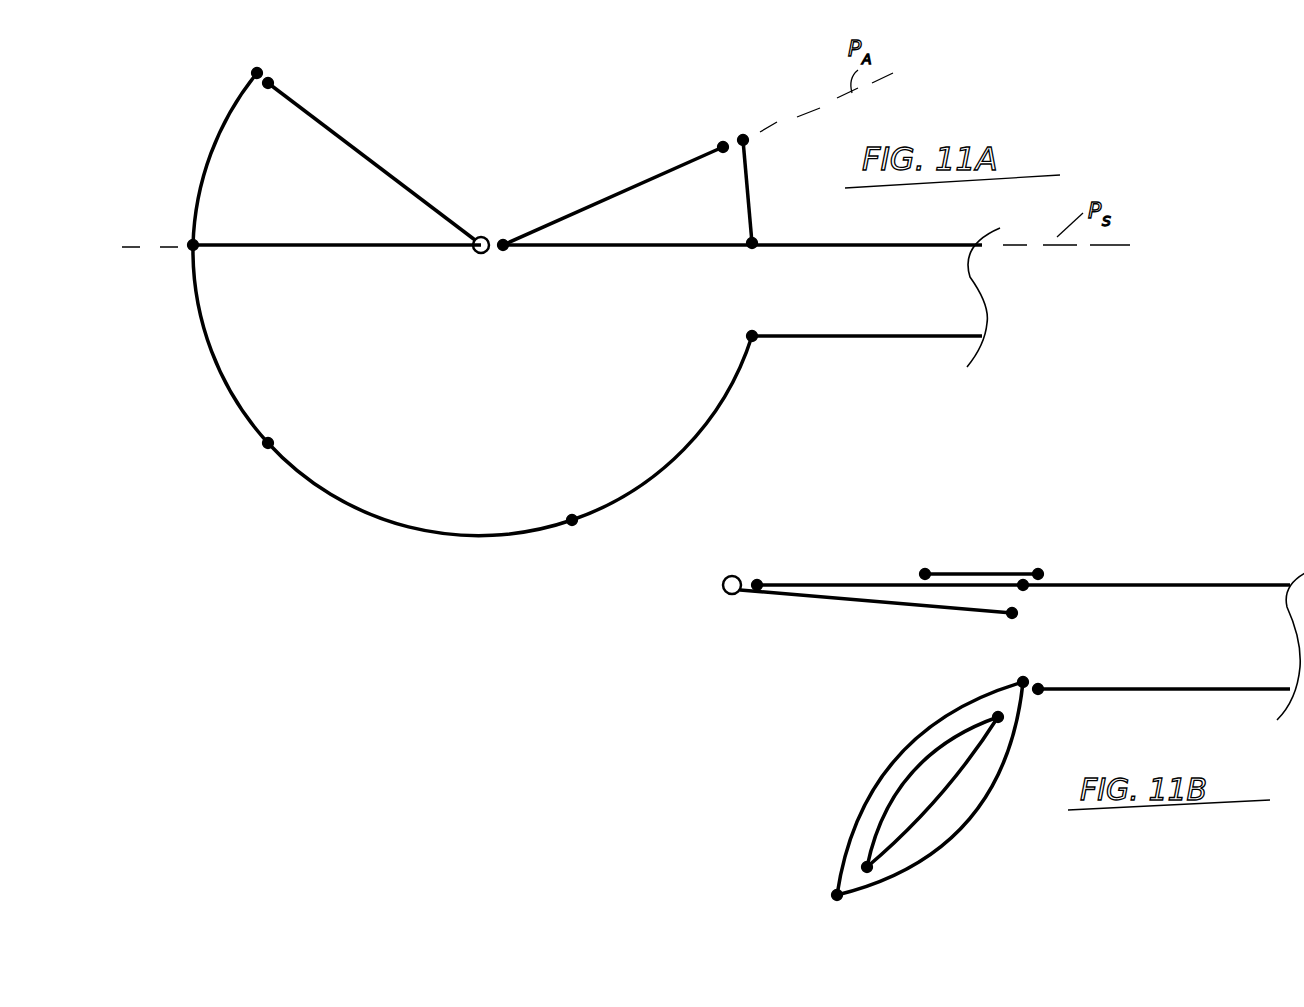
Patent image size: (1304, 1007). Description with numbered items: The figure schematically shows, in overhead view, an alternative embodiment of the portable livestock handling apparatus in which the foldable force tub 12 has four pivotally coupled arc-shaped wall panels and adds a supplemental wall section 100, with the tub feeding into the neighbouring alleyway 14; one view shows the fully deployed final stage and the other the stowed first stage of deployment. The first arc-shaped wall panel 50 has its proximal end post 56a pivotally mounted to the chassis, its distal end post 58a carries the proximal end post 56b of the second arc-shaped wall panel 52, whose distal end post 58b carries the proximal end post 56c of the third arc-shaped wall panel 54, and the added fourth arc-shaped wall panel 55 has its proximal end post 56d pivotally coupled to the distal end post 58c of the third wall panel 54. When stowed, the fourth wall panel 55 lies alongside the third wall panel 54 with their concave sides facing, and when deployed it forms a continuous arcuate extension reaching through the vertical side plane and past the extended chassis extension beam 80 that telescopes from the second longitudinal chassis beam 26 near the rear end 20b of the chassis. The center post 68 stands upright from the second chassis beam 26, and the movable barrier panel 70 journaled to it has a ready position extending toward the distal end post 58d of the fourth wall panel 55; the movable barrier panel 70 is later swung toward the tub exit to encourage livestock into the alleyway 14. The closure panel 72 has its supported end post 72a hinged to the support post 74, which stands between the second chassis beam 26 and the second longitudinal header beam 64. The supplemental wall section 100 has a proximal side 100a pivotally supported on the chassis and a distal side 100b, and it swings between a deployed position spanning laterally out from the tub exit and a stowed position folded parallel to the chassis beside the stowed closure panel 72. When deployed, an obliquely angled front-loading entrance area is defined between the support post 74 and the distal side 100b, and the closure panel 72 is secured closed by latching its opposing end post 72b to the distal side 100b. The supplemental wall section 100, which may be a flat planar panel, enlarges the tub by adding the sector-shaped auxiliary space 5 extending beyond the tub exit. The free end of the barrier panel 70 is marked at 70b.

In FIG. 11A, the solar panel deployment system 5 is at (742, 263).
In FIG. 11A, the foldable force tub 12 is at (613, 166).
In FIG. 11A, the alleyway 14 is at (890, 317).
In FIG. 11A, the rear end of the chassis 20b is at (469, 239).
In FIG. 11B, the rear end of the chassis 20b is at (681, 615).
In FIG. 11A, the second longitudinal chassis beam 26 is at (742, 276).
In FIG. 11B, the second longitudinal chassis beam 26 is at (1023, 552).
In FIG. 11A, the first arc-shaped wall panel 50 is at (685, 457).
In FIG. 11B, the first arc-shaped wall panel 50 is at (970, 817).
In FIG. 11A, the second arc-shaped wall panel 52 is at (432, 535).
In FIG. 11B, the second arc-shaped wall panel 52 is at (918, 753).
In FIG. 11A, the third arc-shaped wall panel 54 is at (215, 365).
In FIG. 11B, the third arc-shaped wall panel 54 is at (1000, 693).
In FIG. 11A, the fourth arc-shaped wall panel 55 is at (213, 145).
In FIG. 11B, the fourth arc-shaped wall panel 55 is at (930, 767).
In FIG. 11A, the proximal end post of the first wall panel 56a is at (757, 345).
In FIG. 11A, the proximal end post of the second wall panel 56b is at (561, 554).
In FIG. 11B, the proximal end post of the second wall panel 56b is at (795, 917).
In FIG. 11A, the proximal end post of the third wall panel 56c is at (231, 470).
In FIG. 11B, the proximal end post of the third wall panel 56c is at (1028, 675).
In FIG. 11A, the proximal end post of the fourth wall panel 56d is at (200, 257).
In FIG. 11B, the proximal end post of the fourth wall panel 56d is at (807, 837).
In FIG. 11A, the distal end post of the first wall panel 58a is at (568, 530).
In FIG. 11B, the distal end post of the first wall panel 58a is at (827, 898).
In FIG. 11A, the distal end post of the second wall panel 58b is at (262, 450).
In FIG. 11A, the distal end post of the third wall panel 58c is at (241, 278).
In FIG. 11B, the distal end post of the third wall panel 58c is at (862, 865).
In FIG. 11A, the distal end post of the fourth wall panel 58d is at (252, 70).
In FIG. 11B, the distal end post of the fourth wall panel 58d is at (990, 715).
In FIG. 11A, the second longitudinal header beam 64 is at (687, 247).
In FIG. 11B, the second longitudinal header beam 64 is at (803, 580).
In FIG. 11A, the center post 68 is at (473, 252).
In FIG. 11B, the center post 68 is at (716, 589).
In FIG. 11A, the movable barrier panel 70 is at (367, 155).
In FIG. 11B, the movable barrier panel 70 is at (853, 607).
In FIG. 11A, the first link distal end 70b is at (275, 77).
In FIG. 11A, the closure panel 72 is at (580, 210).
In FIG. 11B, the closure panel 72 is at (1023, 552).
In FIG. 11A, the supported end post of the closure panel 72a is at (526, 277).
In FIG. 11B, the supported end post of the closure panel 72a is at (748, 555).
In FIG. 11A, the opposing end post of the closure panel 72b is at (720, 142).
In FIG. 11A, the support post 74 is at (503, 262).
In FIG. 11B, the support post 74 is at (757, 577).
In FIG. 11A, the chassis extension beam 80 is at (355, 247).
In FIG. 11A, the supplemental wall section 100 is at (760, 178).
In FIG. 11B, the supplemental wall section 100 is at (967, 572).
In FIG. 11A, the proximal side of the supplemental wall section 100a is at (760, 233).
In FIG. 11B, the proximal side of the supplemental wall section 100a is at (1043, 572).
In FIG. 11A, the distal side of the supplemental wall section 100b is at (748, 132).
In FIG. 11B, the distal side of the supplemental wall section 100b is at (925, 567).